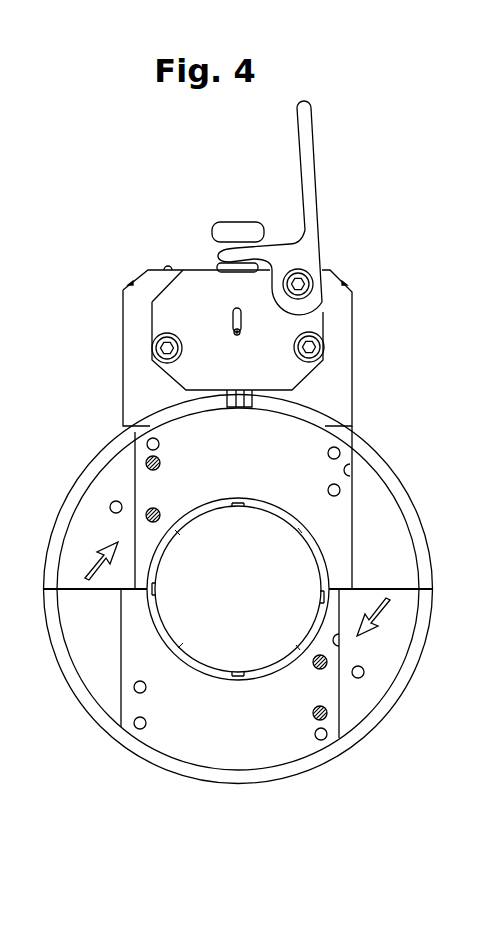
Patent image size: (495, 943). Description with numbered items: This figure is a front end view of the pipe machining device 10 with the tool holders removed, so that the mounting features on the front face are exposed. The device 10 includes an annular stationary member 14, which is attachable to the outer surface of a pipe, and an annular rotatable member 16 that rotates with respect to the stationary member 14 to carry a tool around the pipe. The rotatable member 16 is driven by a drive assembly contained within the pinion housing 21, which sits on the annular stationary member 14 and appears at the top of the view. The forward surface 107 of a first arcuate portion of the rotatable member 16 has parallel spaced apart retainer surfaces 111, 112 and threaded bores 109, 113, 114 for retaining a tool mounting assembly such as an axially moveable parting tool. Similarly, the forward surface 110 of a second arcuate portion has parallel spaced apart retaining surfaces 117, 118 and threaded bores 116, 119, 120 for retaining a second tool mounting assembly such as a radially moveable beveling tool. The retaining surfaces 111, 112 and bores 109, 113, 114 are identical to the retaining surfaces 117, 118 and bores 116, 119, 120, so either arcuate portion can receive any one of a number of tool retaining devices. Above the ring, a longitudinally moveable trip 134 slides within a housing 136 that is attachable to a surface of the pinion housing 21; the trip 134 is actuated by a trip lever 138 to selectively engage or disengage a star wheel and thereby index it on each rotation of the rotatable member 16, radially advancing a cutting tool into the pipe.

The pipe machining device 10 is at (245, 458).
The annular stationary member 14 is at (238, 604).
The annular rotatable member 16 is at (191, 764).
The pinion housing 21 is at (352, 343).
The forward surface 107 is at (335, 530).
The threaded bore 109 is at (147, 456).
The forward surface 110 is at (268, 732).
The retainer surface 111 is at (125, 498).
The retainer surface 112 is at (349, 468).
The threaded bore 113 is at (145, 518).
The threaded bore 114 is at (338, 497).
The threaded bore 116 is at (135, 690).
The retaining surface 117 is at (125, 607).
The retaining surface 118 is at (337, 640).
The threaded bore 119 is at (322, 652).
The threaded bore 120 is at (327, 708).
The trip 134 is at (225, 402).
The housing 136 is at (167, 288).
The trip lever 138 is at (318, 148).